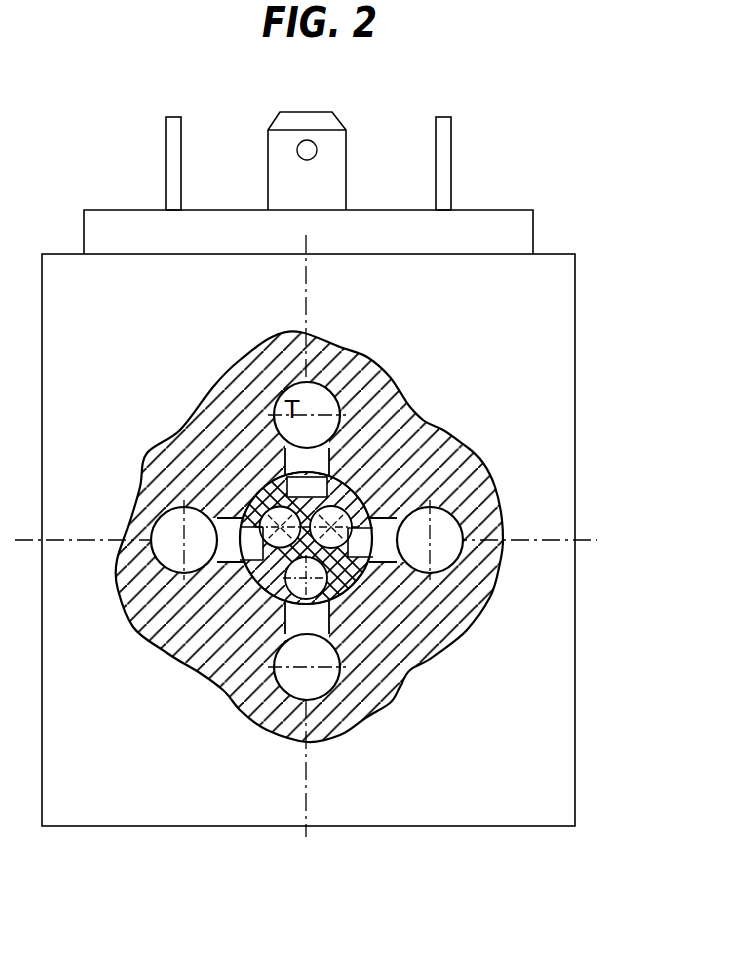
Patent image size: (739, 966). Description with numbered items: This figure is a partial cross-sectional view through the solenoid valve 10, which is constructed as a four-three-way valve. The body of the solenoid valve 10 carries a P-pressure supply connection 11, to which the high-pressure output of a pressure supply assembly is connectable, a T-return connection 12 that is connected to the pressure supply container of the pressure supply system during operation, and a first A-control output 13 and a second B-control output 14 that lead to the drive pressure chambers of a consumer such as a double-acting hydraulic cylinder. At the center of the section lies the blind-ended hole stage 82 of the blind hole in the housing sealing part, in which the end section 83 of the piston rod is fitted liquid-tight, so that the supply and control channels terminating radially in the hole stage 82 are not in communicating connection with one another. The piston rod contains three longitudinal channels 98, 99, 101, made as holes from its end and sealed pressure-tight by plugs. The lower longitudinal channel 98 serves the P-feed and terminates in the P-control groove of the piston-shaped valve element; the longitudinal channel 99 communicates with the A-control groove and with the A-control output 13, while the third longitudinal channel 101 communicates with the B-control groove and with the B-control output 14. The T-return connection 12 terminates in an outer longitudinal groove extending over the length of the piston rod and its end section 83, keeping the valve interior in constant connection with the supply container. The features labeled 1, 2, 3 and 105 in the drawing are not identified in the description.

The solenoid valve 10 is at (612, 228).
The first terminal pin 1 is at (159, 163).
The second terminal pin 2 is at (454, 163).
The center terminal 3 is at (307, 161).
The T-return connection 12 is at (326, 392).
The blind-ended hole stage 82 is at (338, 507).
The end section of the piston rod 83 is at (375, 598).
The tank passage 105 is at (287, 497).
The longitudinal channel 99 is at (280, 507).
The third longitudinal channel 101 is at (355, 478).
The longitudinal channel 98 is at (280, 592).
The first A-control output 13 is at (168, 520).
The second B-control output 14 is at (445, 555).
The P-pressure supply connection 11 is at (325, 655).